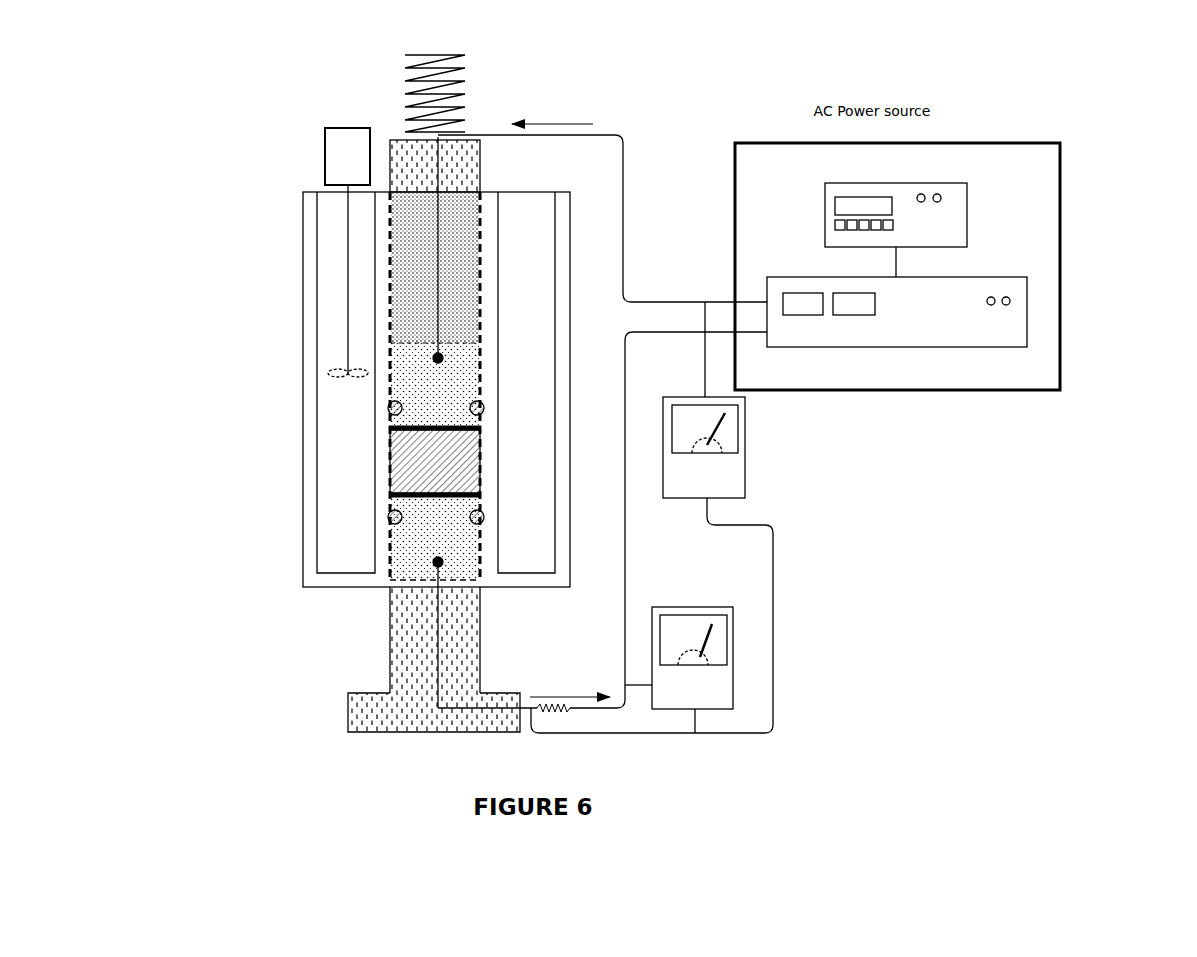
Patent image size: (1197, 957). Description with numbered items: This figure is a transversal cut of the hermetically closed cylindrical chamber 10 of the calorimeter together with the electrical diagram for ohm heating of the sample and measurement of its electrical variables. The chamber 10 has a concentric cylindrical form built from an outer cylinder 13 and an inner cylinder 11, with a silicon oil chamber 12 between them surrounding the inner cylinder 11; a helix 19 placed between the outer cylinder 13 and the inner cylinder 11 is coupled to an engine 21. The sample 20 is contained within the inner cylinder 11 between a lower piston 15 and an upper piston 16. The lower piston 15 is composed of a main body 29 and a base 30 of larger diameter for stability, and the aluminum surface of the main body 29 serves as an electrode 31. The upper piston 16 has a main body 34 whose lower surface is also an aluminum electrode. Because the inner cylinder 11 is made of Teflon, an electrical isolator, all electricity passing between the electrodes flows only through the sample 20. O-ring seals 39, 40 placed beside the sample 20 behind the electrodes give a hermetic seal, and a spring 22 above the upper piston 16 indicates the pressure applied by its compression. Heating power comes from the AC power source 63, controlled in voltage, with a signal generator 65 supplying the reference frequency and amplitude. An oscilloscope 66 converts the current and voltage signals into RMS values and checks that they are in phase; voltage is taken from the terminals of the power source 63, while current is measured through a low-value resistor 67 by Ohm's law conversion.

The hermetically closed cylindrical chamber 10 is at (237, 115).
The inner cylinder 11 is at (490, 237).
The silicon oil chamber 12 is at (330, 552).
The outer cylinder 13 is at (313, 218).
The lower piston 15 is at (363, 657).
The upper piston 16 is at (490, 188).
The helix 19 is at (325, 373).
The sample 20 is at (417, 481).
The engine 21 is at (343, 165).
The spring 22 is at (456, 96).
The main body 29 is at (397, 623).
The base 30 is at (362, 713).
The first electrode 31 is at (478, 498).
The main body 34 is at (456, 272).
The o-ring seal 39 is at (393, 409).
The o-ring seal 40 is at (393, 515).
The AC power source 63 is at (983, 323).
The signal generator 65 is at (950, 216).
The oscilloscope 66 is at (737, 661).
The resistor 67 is at (540, 712).